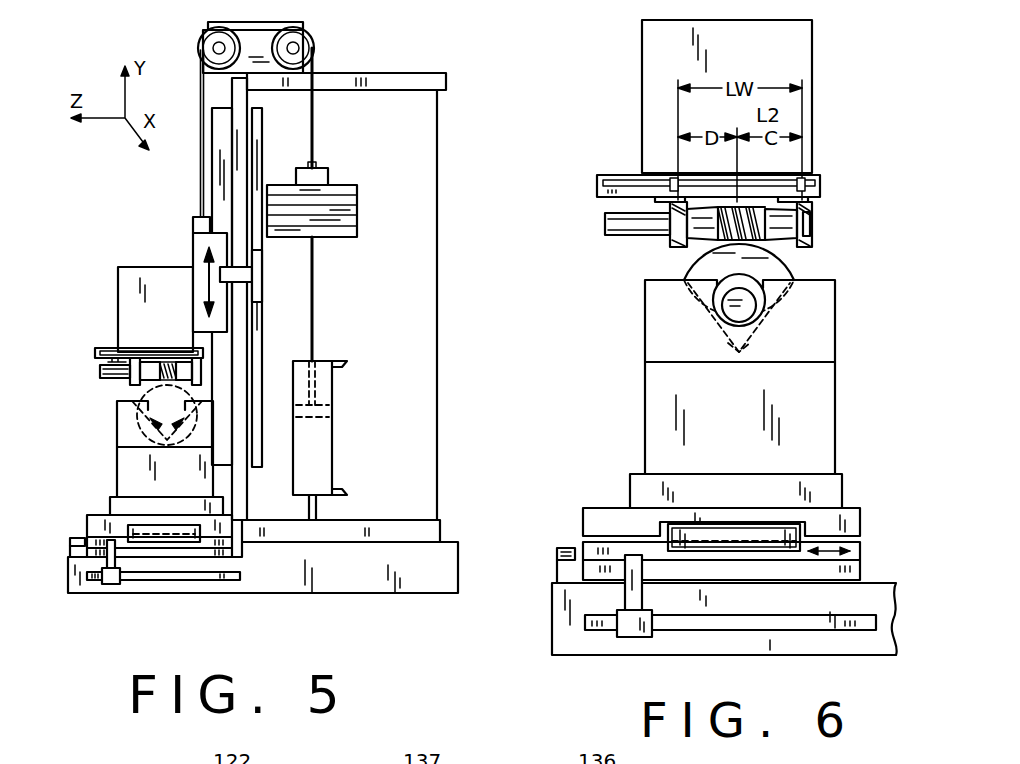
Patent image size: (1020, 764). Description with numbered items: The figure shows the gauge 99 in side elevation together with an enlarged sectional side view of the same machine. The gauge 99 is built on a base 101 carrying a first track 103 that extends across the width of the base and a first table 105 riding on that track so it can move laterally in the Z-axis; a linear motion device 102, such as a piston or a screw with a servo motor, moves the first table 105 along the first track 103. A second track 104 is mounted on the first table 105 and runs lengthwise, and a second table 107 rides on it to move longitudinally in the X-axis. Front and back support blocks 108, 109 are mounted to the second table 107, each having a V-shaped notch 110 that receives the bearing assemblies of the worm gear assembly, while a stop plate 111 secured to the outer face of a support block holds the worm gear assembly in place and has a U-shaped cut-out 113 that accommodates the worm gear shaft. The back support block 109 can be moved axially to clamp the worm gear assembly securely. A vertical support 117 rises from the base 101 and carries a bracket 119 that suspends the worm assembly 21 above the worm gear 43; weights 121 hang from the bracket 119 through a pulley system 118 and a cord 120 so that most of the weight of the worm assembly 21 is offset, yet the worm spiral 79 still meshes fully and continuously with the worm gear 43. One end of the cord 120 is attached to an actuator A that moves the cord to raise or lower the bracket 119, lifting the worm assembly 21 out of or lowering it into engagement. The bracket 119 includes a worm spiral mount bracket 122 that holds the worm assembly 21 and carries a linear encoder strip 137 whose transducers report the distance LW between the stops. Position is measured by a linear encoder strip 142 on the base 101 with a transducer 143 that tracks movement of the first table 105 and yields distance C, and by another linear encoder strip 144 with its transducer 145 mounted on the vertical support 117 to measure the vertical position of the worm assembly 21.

In FIG. 5, the gauge 99 is at (425, 59).
In FIG. 5, the vertical support 117 is at (437, 162).
In FIG. 5, the pulley system 118 is at (314, 31).
In FIG. 5, the bracket 119 is at (163, 267).
In FIG. 6, the bracket 119 is at (787, 70).
In FIG. 5, the cord 120 is at (313, 133).
In FIG. 5, the weights 121 is at (358, 217).
In FIG. 5, the worm spiral mount bracket 122 is at (94, 353).
In FIG. 5, the worm assembly 21 is at (164, 362).
In FIG. 5, the linear encoder strip 144 is at (263, 325).
In FIG. 5, the transducer 145 is at (258, 268).
In FIG. 5, the U shaped cut-out 113 is at (156, 395).
In FIG. 6, the U shaped cut-out 113 is at (728, 303).
In FIG. 5, the V shaped notch 110 is at (138, 408).
In FIG. 6, the V shaped notch 110 is at (793, 290).
In FIG. 6, the stop plate 111 is at (694, 294).
In FIG. 5, the front support block 108 is at (148, 463).
In FIG. 6, the front support block 108 is at (803, 457).
In FIG. 5, the back support block 109 is at (147, 507).
In FIG. 6, the back support block 109 is at (690, 490).
In FIG. 5, the second table 107 is at (97, 519).
In FIG. 6, the second table 107 is at (843, 522).
In FIG. 5, the second track 104 is at (134, 530).
In FIG. 6, the second track 104 is at (683, 547).
In FIG. 5, the first table 105 is at (243, 550).
In FIG. 6, the first table 105 is at (606, 560).
In FIG. 5, the first track 103 is at (232, 553).
In FIG. 6, the first track 103 is at (598, 568).
In FIG. 5, the linear motion device 102 is at (76, 543).
In FIG. 6, the linear motion device 102 is at (555, 549).
In FIG. 5, the base 101 is at (282, 590).
In FIG. 6, the base 101 is at (699, 636).
In FIG. 5, the linear encoder strip 142 is at (203, 582).
In FIG. 6, the linear encoder strip 142 is at (763, 617).
In FIG. 5, the transducer 143 is at (110, 590).
In FIG. 6, the transducer 143 is at (633, 625).
In FIG. 5, the actuator A is at (333, 435).
In FIG. 6, the worm spiral 79 is at (743, 210).
In FIG. 6, the linear encoder strip 137 is at (653, 201).
In FIG. 6, the worm gear 43 is at (787, 258).